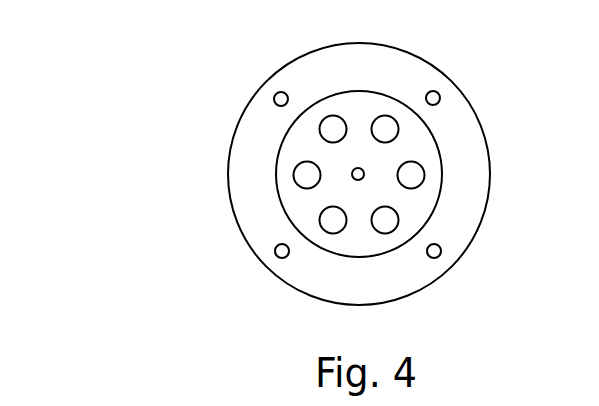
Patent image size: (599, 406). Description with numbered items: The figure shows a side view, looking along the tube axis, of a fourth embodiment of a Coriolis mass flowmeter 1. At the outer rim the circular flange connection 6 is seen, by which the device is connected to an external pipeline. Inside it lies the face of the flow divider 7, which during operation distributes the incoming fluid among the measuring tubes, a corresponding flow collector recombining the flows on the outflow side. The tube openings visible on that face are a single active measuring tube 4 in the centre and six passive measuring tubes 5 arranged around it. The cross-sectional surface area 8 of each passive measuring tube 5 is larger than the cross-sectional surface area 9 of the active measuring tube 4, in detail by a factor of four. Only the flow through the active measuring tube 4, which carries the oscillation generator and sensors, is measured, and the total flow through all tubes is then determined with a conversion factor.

The Coriolis mass flowmeter 1 is at (116, 84).
The active measuring tube 4 is at (357, 181).
The passive measuring tubes 5 is at (361, 120).
The flange connection 6 is at (250, 222).
The flow divider 7 is at (316, 236).
The cross-sectional surface area of the passive measuring tube 8 is at (383, 125).
The cross-sectional surface area of the active measuring tube 9 is at (358, 168).